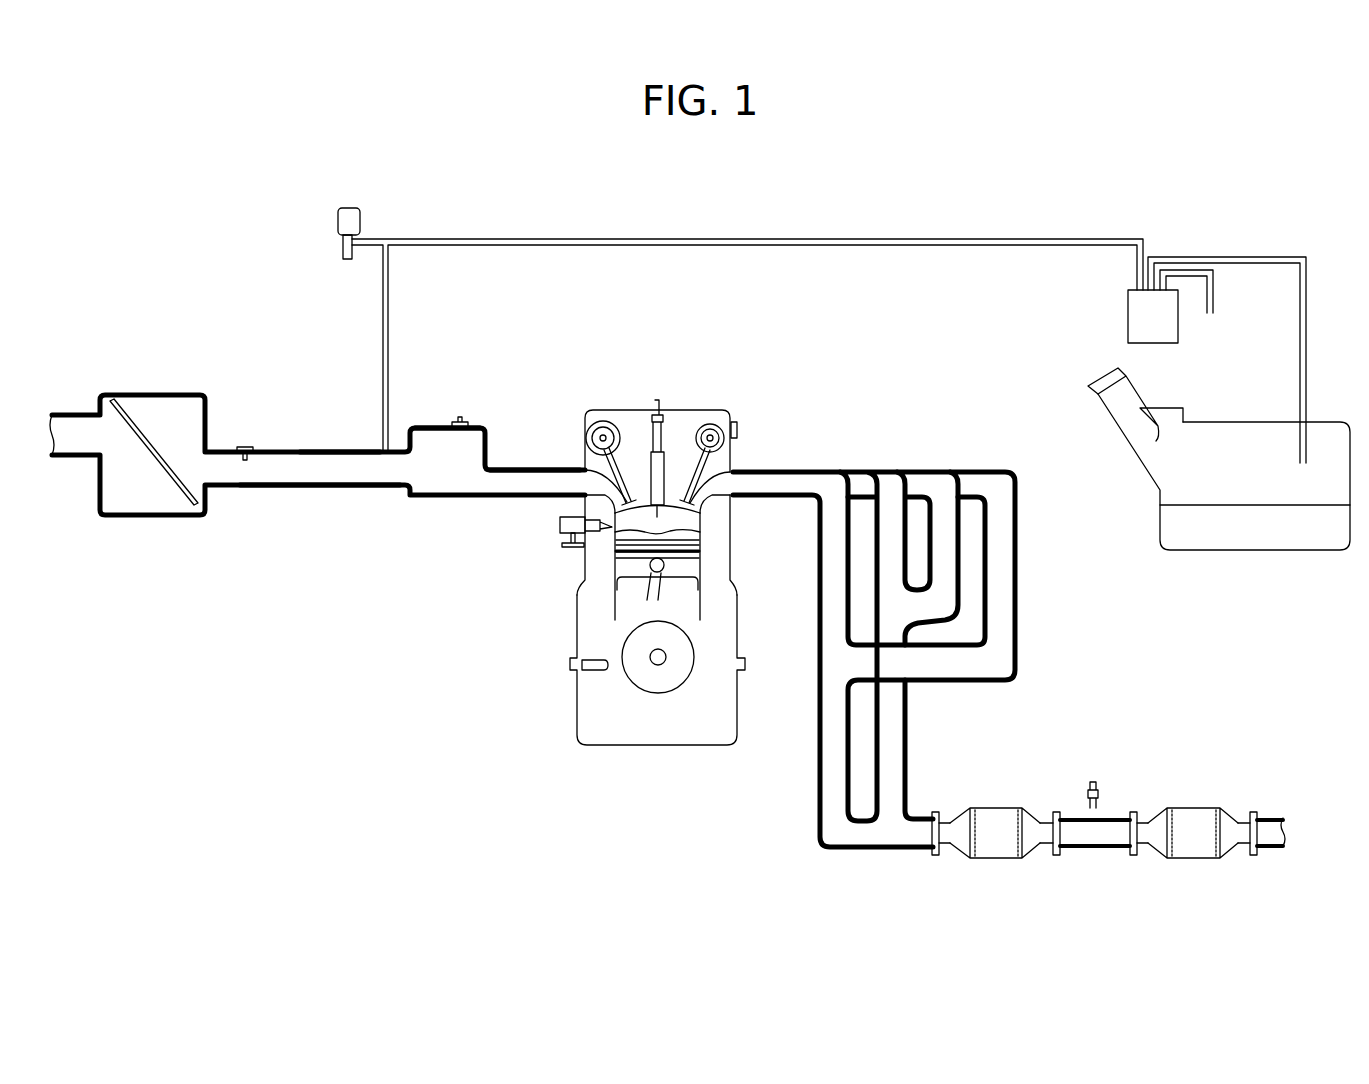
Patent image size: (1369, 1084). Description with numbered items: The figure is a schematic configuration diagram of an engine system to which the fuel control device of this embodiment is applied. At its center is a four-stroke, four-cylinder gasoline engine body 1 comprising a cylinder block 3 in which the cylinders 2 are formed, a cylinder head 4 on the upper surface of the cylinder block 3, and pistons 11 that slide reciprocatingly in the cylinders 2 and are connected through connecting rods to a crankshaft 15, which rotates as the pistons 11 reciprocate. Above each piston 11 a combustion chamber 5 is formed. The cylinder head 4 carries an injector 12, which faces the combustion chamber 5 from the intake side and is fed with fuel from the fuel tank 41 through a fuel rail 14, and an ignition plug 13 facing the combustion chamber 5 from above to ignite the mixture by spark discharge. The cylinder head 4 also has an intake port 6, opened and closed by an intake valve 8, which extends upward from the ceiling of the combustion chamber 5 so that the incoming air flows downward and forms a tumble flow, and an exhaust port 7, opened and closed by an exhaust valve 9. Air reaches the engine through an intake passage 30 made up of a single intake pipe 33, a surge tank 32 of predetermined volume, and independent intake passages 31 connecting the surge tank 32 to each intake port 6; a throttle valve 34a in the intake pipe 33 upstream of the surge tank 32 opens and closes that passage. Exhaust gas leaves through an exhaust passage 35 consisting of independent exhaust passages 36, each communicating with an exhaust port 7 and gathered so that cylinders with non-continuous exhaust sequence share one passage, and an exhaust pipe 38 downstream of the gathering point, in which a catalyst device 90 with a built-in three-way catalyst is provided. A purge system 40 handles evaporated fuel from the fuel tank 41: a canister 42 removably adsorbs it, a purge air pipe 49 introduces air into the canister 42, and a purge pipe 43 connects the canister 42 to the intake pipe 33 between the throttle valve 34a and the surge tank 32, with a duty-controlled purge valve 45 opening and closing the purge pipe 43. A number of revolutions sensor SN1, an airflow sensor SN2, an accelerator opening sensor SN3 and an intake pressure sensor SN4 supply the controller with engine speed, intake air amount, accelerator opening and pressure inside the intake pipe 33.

The engine body 1 is at (596, 548).
The cylinder 2 is at (718, 540).
The cylinder block 3 is at (737, 631).
The cylinder head 4 is at (735, 460).
The combustion chamber 5 is at (657, 550).
The intake port 6 is at (598, 487).
The exhaust port 7 is at (722, 498).
The intake valve 8 is at (612, 500).
The exhaust valve 9 is at (738, 515).
The piston 11 is at (725, 565).
The injector 12 is at (600, 556).
The ignition plug 13 is at (648, 440).
The fuel rail 14 is at (560, 526).
The crankshaft 15 is at (666, 655).
The intake passage 30 is at (315, 405).
The independent intake passage 31 is at (508, 466).
The surge tank 32 is at (432, 425).
The intake pipe 33 is at (372, 446).
The throttle valve 34a is at (318, 483).
The exhaust passage 35 is at (1040, 563).
The independent exhaust passage 36 is at (958, 468).
The exhaust pipe 38 is at (915, 856).
The purge system 40 is at (1066, 196).
The fuel tank 41 is at (1325, 420).
The canister 42 is at (1128, 320).
The purge pipe 43 is at (880, 237).
The purge valve 45 is at (362, 214).
The purge air pipe 49 is at (1213, 299).
The catalyst device 90 is at (996, 814).
The number of revolutions sensor SN1 is at (580, 663).
The airflow sensor SN2 is at (244, 445).
The accelerator opening sensor SN3 is at (460, 418).
The intake pressure sensor SN4 is at (572, 548).